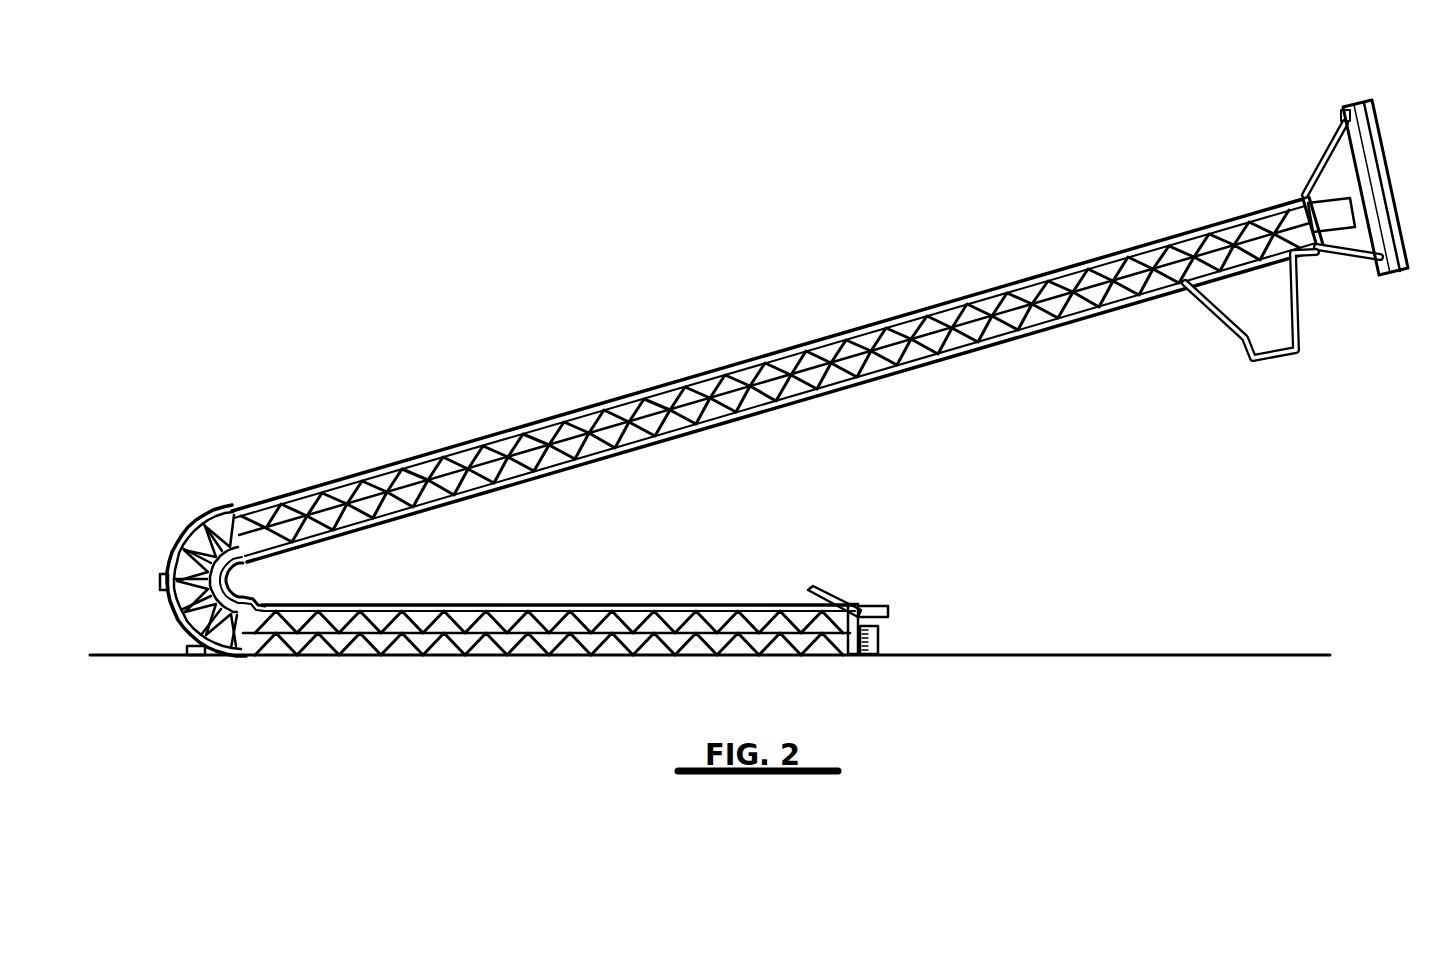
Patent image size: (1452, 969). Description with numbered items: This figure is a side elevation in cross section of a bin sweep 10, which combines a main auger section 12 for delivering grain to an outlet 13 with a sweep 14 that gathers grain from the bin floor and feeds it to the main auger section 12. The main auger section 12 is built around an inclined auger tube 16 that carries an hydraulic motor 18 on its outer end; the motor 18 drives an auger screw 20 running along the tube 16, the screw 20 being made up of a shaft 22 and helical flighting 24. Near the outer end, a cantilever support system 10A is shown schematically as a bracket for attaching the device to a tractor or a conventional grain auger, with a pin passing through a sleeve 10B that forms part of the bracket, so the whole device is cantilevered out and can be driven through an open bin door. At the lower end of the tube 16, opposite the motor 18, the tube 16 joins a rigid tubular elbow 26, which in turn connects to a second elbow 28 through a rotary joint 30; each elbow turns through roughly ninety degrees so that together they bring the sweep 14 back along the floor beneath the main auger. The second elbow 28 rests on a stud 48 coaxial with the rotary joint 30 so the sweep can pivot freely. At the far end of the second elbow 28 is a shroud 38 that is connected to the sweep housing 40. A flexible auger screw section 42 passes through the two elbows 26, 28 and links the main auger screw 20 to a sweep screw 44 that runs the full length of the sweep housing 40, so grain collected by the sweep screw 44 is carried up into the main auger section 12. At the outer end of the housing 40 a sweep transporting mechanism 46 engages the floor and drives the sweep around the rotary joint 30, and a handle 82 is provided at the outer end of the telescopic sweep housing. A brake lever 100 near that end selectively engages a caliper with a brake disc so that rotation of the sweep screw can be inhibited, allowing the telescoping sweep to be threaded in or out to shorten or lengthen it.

The bin sweep 10 is at (1142, 470).
The cantilever support system 10A is at (1317, 105).
The sleeve 10B is at (1390, 268).
The main auger section 12 is at (886, 308).
The outlet 13 is at (1278, 345).
The sweep 14 is at (604, 587).
The auger tube 16 is at (607, 400).
The hydraulic motor 18 is at (1340, 213).
The auger screw 20 is at (762, 368).
The shaft 22 is at (868, 365).
The helical flighting 24 is at (993, 335).
The rigid tubular elbow 26 is at (207, 515).
The second elbow 28 is at (172, 622).
The rotary joint 30 is at (158, 582).
The shroud 38 is at (266, 592).
The sweep housing 40 is at (511, 592).
The flexible auger screw section 42 is at (184, 544).
The sweep screw 44 is at (379, 608).
The sweep transporting mechanism 46 is at (890, 636).
The stud 48 is at (188, 650).
The handle 82 is at (880, 611).
The brake lever 100 is at (834, 580).